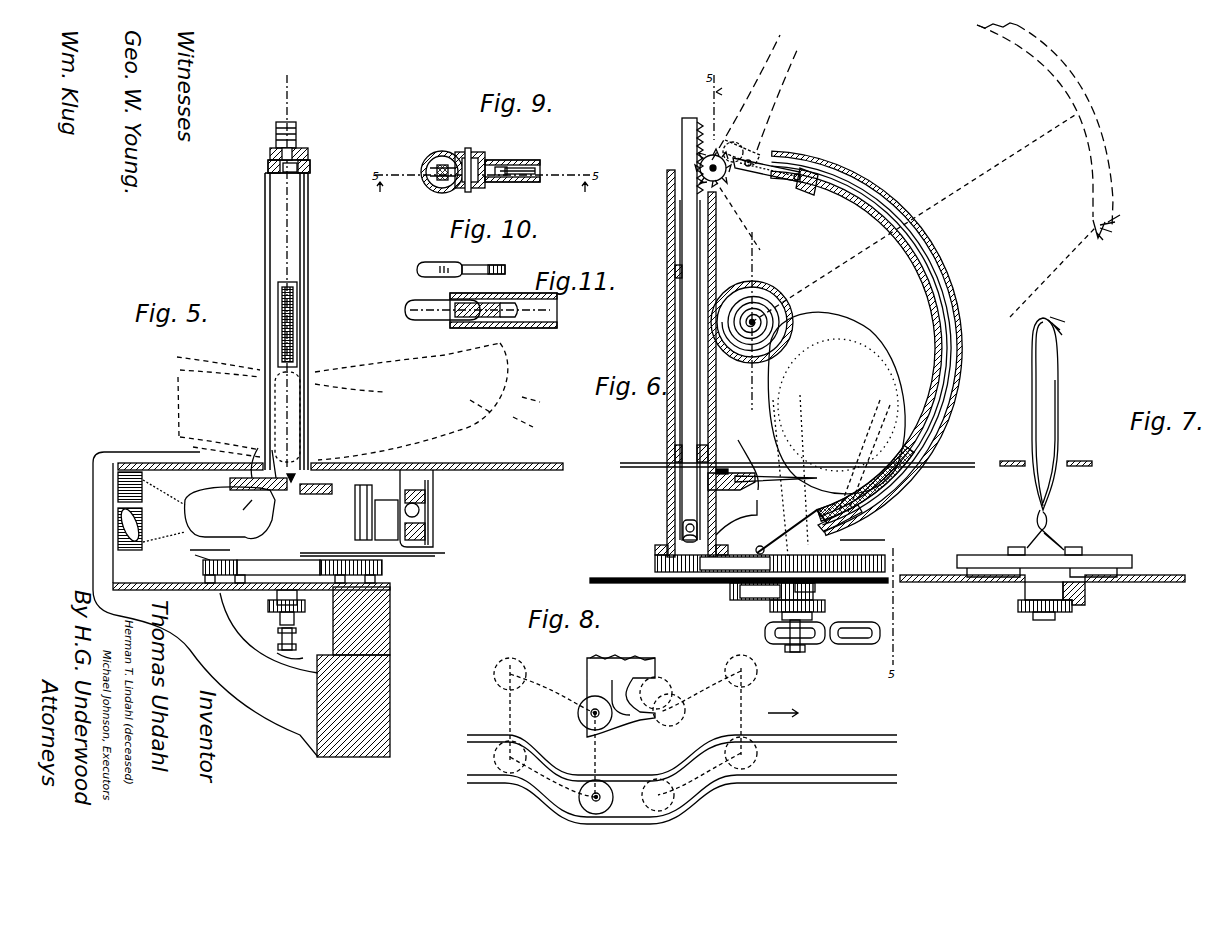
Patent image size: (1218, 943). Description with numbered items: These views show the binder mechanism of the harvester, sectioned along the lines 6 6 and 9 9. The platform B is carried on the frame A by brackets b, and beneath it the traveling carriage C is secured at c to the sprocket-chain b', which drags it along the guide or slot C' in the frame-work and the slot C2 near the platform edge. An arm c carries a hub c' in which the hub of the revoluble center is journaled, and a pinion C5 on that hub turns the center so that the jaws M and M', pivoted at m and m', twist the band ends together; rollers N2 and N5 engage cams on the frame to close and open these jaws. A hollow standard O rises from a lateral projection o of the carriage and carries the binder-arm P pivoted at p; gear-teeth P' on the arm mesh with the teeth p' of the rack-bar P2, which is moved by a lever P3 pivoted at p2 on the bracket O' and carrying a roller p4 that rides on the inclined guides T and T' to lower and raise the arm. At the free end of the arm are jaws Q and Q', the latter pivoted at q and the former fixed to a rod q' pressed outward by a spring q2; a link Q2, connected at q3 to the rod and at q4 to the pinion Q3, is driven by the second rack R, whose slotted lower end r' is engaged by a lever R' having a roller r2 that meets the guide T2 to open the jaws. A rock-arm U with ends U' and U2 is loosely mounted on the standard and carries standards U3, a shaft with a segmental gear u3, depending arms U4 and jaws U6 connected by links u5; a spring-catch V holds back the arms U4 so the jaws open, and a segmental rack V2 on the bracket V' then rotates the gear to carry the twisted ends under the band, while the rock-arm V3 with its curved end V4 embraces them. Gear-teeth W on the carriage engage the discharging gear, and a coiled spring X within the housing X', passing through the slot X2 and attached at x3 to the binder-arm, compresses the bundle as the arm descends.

In FIG. 5, the frame A is at (353, 672).
In FIG. 5, the platform B is at (500, 463).
In FIG. 6, the platform B is at (966, 463).
In FIG. 7, the platform B is at (1088, 460).
In FIG. 5, the traveling carriage C is at (237, 411).
In FIG. 6, the traveling carriage C is at (686, 363).
In FIG. 7, the traveling carriage C is at (1044, 555).
In FIG. 5, the guide or slot C' is at (271, 605).
In FIG. 6, the guide or slot C' is at (818, 586).
In FIG. 7, the guide or slot C' is at (995, 600).
In FIG. 5, the slot C2 is at (320, 470).
In FIG. 6, the slot C2 is at (812, 616).
In FIG. 7, the slot C2 is at (1055, 617).
In FIG. 5, the pinion C5 is at (305, 606).
In FIG. 6, the pinion C5 is at (770, 607).
In FIG. 7, the pinion C5 is at (1022, 612).
In FIG. 5, the arm c is at (283, 639).
In FIG. 6, the arm c is at (761, 623).
In FIG. 5, the hub c' is at (287, 596).
In FIG. 7, the hub c' is at (1055, 593).
In FIG. 5, the jaw M is at (250, 509).
In FIG. 6, the jaw M is at (792, 531).
In FIG. 7, the jaw M is at (1025, 436).
In FIG. 5, the jaw M' is at (328, 516).
In FIG. 7, the jaw M' is at (1081, 534).
In FIG. 5, the roller N2 is at (395, 574).
In FIG. 6, the roller N2 is at (846, 548).
In FIG. 5, the roller N5 is at (228, 578).
In FIG. 5, the hollow standard O is at (299, 272).
In FIG. 9, the hollow standard O is at (442, 159).
In FIG. 6, the hollow standard O is at (653, 440).
In FIG. 5, the bracket O' is at (230, 492).
In FIG. 6, the bracket O' is at (695, 360).
In FIG. 5, the binder-arm P is at (253, 176).
In FIG. 9, the binder-arm P is at (521, 158).
In FIG. 11, the binder-arm P is at (503, 322).
In FIG. 6, the binder-arm P is at (866, 343).
In FIG. 5, the gear-teeth P' is at (262, 197).
In FIG. 9, the rack P2 is at (430, 178).
In FIG. 5, the lever P3 is at (190, 550).
In FIG. 5, the pivot p is at (303, 159).
In FIG. 9, the pivot p is at (472, 199).
In FIG. 6, the pivot p is at (721, 178).
In FIG. 5, the teeth p' is at (262, 132).
In FIG. 9, the teeth p' is at (427, 205).
In FIG. 5, the pivot p2 is at (222, 518).
In FIG. 5, the roller p4 is at (122, 530).
In FIG. 8, the roller p4 is at (612, 795).
In FIG. 5, the jaw Q is at (230, 513).
In FIG. 11, the jaw Q is at (477, 327).
In FIG. 6, the jaw Q is at (780, 478).
In FIG. 5, the jaw Q' is at (284, 525).
In FIG. 10, the jaw Q' is at (445, 270).
In FIG. 11, the jaw Q' is at (461, 336).
In FIG. 6, the jaw Q' is at (806, 470).
In FIG. 9, the link Q2 is at (528, 180).
In FIG. 6, the link Q2 is at (785, 150).
In FIG. 5, the pinion Q3 is at (302, 150).
In FIG. 9, the pinion Q3 is at (468, 148).
In FIG. 6, the pinion Q3 is at (733, 142).
In FIG. 11, the pivot q is at (484, 294).
In FIG. 6, the pivot q is at (854, 466).
In FIG. 11, the rod q' is at (539, 313).
In FIG. 6, the rod q' is at (960, 291).
In FIG. 6, the spring q2 is at (912, 472).
In FIG. 6, the connection q3 is at (810, 172).
In FIG. 9, the connection q4 is at (500, 180).
In FIG. 6, the connection q4 is at (750, 160).
In FIG. 5, the second rack R is at (293, 119).
In FIG. 9, the second rack R is at (417, 157).
In FIG. 6, the second rack R is at (671, 329).
In FIG. 5, the lever R' is at (372, 510).
In FIG. 6, the lever R' is at (671, 522).
In FIG. 6, the slotted lower end r' is at (664, 531).
In FIG. 5, the roller r2 is at (420, 510).
In FIG. 8, the roller r2 is at (585, 705).
In FIG. 5, the inclined guide T is at (123, 511).
In FIG. 8, the inclined guide T is at (682, 778).
In FIG. 8, the cam-surface T' is at (682, 799).
In FIG. 5, the inclined guide T2 is at (433, 492).
In FIG. 6, the inclined guide T2 is at (740, 522).
In FIG. 8, the inclined guide T2 is at (632, 725).
In FIG. 5, the rock-arm U is at (386, 520).
In FIG. 6, the rock-arm U is at (641, 544).
In FIG. 5, the projecting arm U' is at (185, 568).
In FIG. 5, the projecting arm U2 is at (400, 556).
In FIG. 5, the standards U3 is at (372, 470).
In FIG. 5, the depending arms U4 is at (332, 530).
In FIG. 5, the jaws U6 is at (456, 576).
In FIG. 5, the segmental gear u3 is at (318, 499).
In FIG. 5, the links u5 is at (343, 552).
In FIG. 5, the spring-catch V is at (276, 458).
In FIG. 5, the bracket V' is at (270, 425).
In FIG. 6, the bracket V' is at (748, 456).
In FIG. 5, the segmental rack V2 is at (281, 491).
In FIG. 6, the segmental rack V2 is at (752, 470).
In FIG. 5, the rock-arm V3 is at (300, 470).
In FIG. 6, the rock-arm V3 is at (722, 468).
In FIG. 6, the curved end V4 is at (802, 476).
In FIG. 5, the gear-teeth W is at (195, 588).
In FIG. 6, the gear-teeth W is at (690, 586).
In FIG. 5, the coiled spring X is at (307, 324).
In FIG. 6, the coiled spring X is at (793, 288).
In FIG. 5, the housing X' is at (322, 317).
In FIG. 6, the housing X' is at (752, 308).
In FIG. 6, the slot X2 is at (798, 324).
In FIG. 6, the connection x3 is at (890, 472).
In FIG. 5, the standards or brackets b is at (92, 493).
In FIG. 5, the sprocket-chain b' is at (294, 679).
In FIG. 6, the sprocket-chain b' is at (822, 644).
In FIG. 5, the pivot m is at (245, 557).
In FIG. 6, the pivot m is at (751, 545).
In FIG. 5, the pivot m' is at (303, 564).
In FIG. 6, the lateral projection o is at (658, 566).
In FIG. 5, the section line 6 is at (272, 92).
In FIG. 6, the section line 9 is at (708, 172).